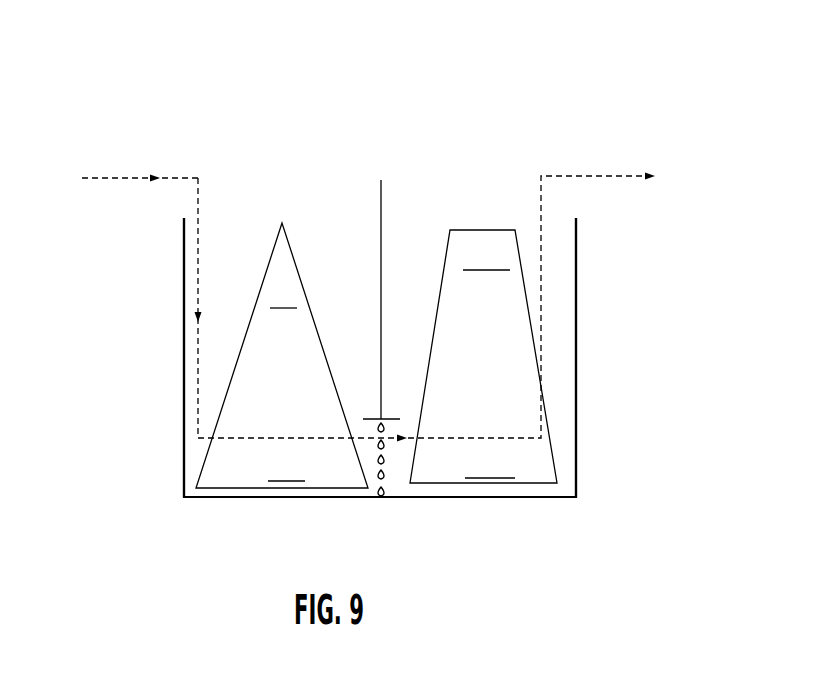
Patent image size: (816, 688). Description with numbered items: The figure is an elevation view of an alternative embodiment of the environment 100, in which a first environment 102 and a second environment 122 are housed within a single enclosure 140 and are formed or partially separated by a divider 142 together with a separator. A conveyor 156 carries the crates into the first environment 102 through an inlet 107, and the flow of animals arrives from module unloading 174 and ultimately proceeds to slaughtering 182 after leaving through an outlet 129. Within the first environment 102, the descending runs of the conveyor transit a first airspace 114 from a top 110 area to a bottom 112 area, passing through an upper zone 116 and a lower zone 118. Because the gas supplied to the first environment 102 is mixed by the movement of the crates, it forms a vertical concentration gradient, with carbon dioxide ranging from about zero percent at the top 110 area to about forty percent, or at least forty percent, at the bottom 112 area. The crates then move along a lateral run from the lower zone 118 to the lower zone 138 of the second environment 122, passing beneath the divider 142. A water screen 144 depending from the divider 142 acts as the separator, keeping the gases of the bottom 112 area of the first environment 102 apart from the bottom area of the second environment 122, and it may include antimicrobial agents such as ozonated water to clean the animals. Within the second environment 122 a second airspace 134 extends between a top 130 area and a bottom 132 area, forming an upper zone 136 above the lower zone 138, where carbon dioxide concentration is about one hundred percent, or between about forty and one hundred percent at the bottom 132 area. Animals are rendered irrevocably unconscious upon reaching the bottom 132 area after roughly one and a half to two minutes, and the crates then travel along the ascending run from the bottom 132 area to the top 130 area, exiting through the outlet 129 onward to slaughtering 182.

The electrochemical cell system 100 is at (387, 101).
The first environment 102 is at (304, 150).
The inlet 107 is at (197, 133).
The top area 110 is at (218, 258).
The bottom area 112 is at (186, 423).
The first airspace 114 is at (154, 348).
The upper zone 116 is at (155, 244).
The lower zone 118 is at (155, 470).
The second environment 122 is at (479, 161).
The outlet 129 is at (574, 145).
The top area 130 is at (589, 250).
The bottom area 132 is at (587, 437).
The second airspace 134 is at (587, 372).
The upper zone 136 is at (562, 346).
The lower zone 138 is at (562, 474).
The enclosure 140 is at (533, 497).
The divider 142 is at (382, 202).
The water screen 144 is at (399, 510).
The conveyor 156 is at (162, 126).
The module unloading 174 is at (72, 150).
The slaughtering 182 is at (691, 145).